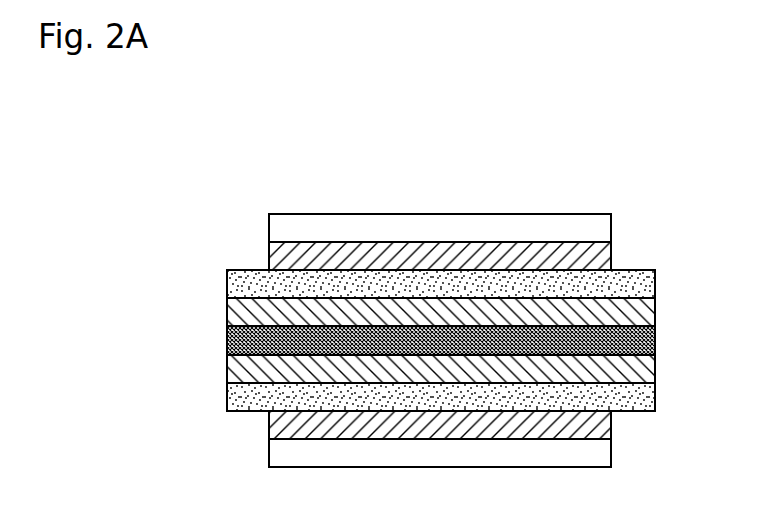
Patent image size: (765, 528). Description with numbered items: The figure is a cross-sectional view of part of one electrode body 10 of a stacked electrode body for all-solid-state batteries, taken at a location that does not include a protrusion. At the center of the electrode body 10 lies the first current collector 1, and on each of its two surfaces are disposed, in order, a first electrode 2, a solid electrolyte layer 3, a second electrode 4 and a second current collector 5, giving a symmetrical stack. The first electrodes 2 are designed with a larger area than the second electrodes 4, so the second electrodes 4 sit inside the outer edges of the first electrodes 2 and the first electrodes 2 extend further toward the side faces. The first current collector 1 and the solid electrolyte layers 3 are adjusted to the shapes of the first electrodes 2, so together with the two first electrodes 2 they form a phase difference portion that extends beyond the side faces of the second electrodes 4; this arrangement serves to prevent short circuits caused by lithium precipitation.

The electrode body 10 is at (458, 180).
The first current collector 1 is at (227, 342).
The first electrode 2 is at (227, 307).
The solid electrolyte layer 3 is at (227, 277).
The second electrode 4 is at (269, 252).
The second current collector 5 is at (269, 222).